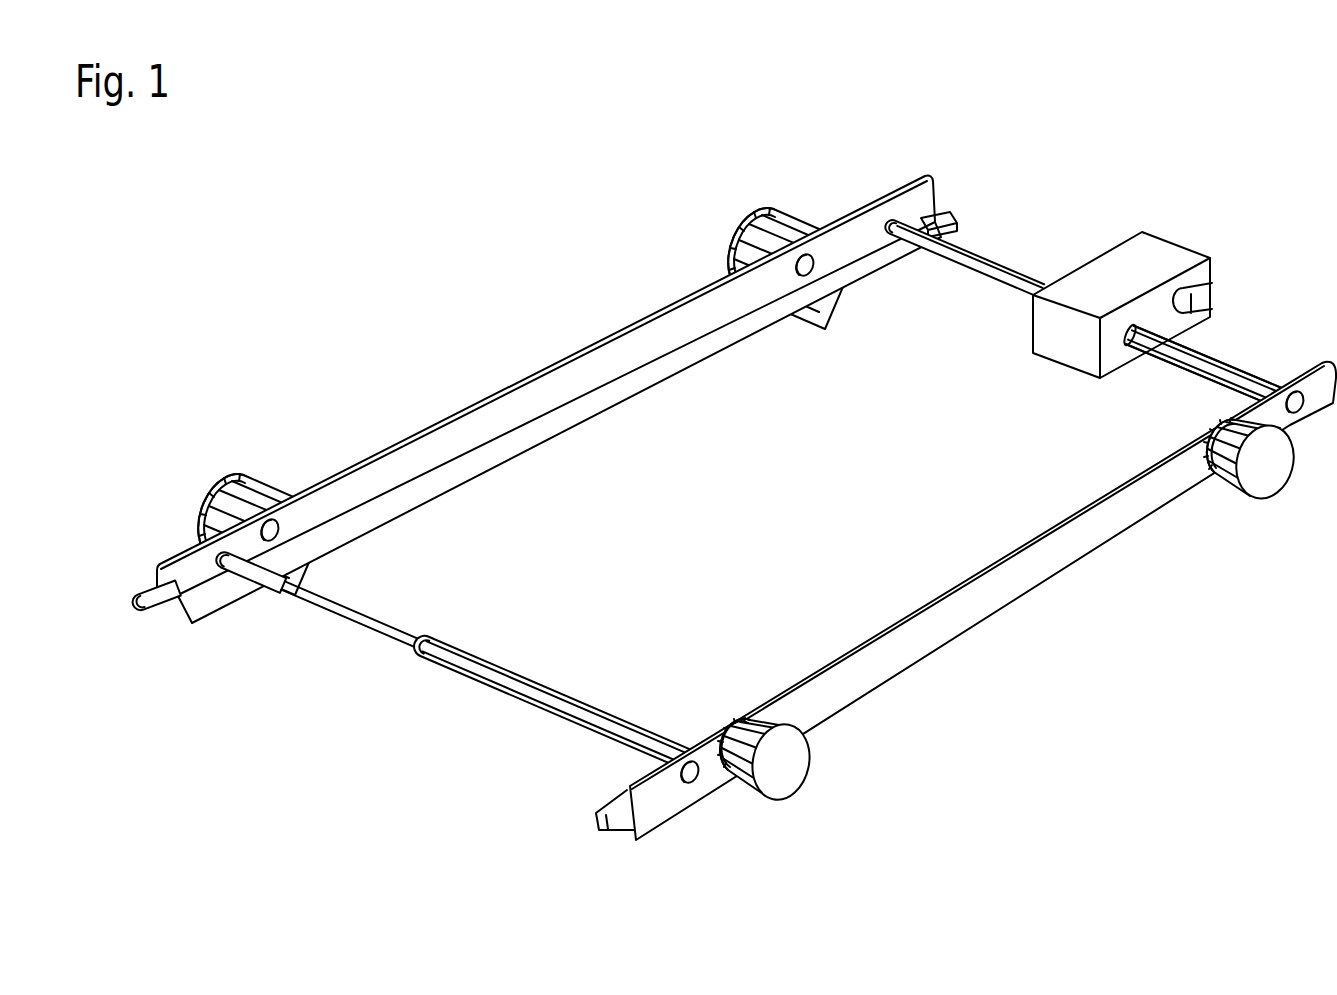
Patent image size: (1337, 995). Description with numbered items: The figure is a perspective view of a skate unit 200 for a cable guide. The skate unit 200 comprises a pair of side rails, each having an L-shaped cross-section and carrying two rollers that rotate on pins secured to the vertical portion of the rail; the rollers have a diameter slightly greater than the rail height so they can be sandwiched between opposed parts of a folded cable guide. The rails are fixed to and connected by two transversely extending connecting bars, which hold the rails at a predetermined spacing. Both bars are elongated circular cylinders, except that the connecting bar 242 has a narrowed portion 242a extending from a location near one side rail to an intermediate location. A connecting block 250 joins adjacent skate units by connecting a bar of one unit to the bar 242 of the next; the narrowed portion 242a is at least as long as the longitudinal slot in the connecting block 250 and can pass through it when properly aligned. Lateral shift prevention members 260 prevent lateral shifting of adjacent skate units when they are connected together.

The skate unit 200 is at (1020, 747).
The connecting bar 242 is at (494, 688).
The narrowed portion 242a is at (416, 670).
The connecting block 250 is at (1167, 250).
The lateral shift prevention member 260 is at (147, 610).